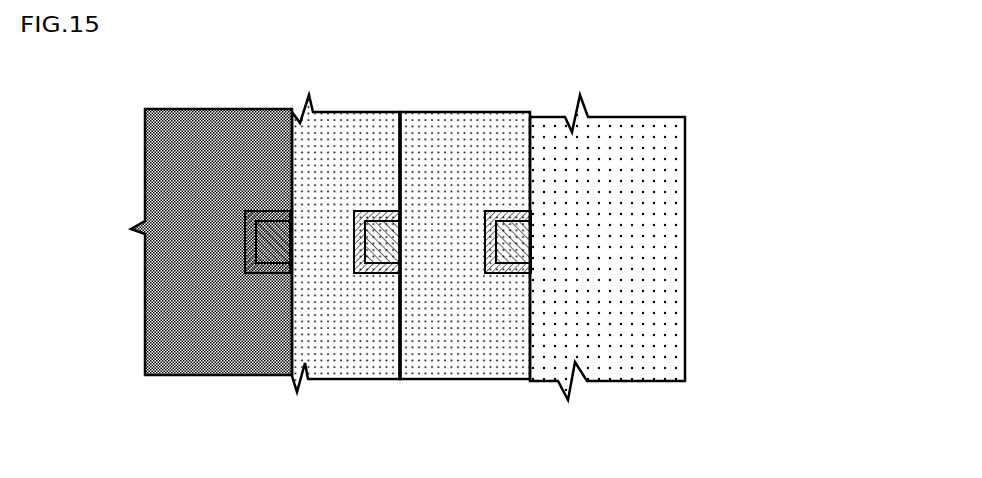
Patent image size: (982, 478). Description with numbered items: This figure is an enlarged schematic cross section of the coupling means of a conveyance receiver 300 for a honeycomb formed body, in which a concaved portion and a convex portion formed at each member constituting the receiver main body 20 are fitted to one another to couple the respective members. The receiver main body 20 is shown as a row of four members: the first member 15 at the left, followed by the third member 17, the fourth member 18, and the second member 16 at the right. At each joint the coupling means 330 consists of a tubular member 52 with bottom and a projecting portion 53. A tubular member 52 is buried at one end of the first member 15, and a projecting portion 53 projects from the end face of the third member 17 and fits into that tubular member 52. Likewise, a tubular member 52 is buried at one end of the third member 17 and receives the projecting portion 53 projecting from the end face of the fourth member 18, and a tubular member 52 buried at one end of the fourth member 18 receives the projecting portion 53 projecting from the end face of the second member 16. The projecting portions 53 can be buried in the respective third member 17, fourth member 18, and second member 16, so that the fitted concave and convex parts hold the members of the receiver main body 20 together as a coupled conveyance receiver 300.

The first member 15 is at (202, 360).
The second member 16 is at (643, 360).
The third member 17 is at (370, 358).
The fourth member 18 is at (480, 363).
The receiver main body 20 is at (688, 352).
The tubular member with bottom 52 is at (253, 211).
The projecting portion 53 is at (510, 273).
The conveyance receiver 300 is at (713, 60).
The coupling means 330 is at (396, 261).